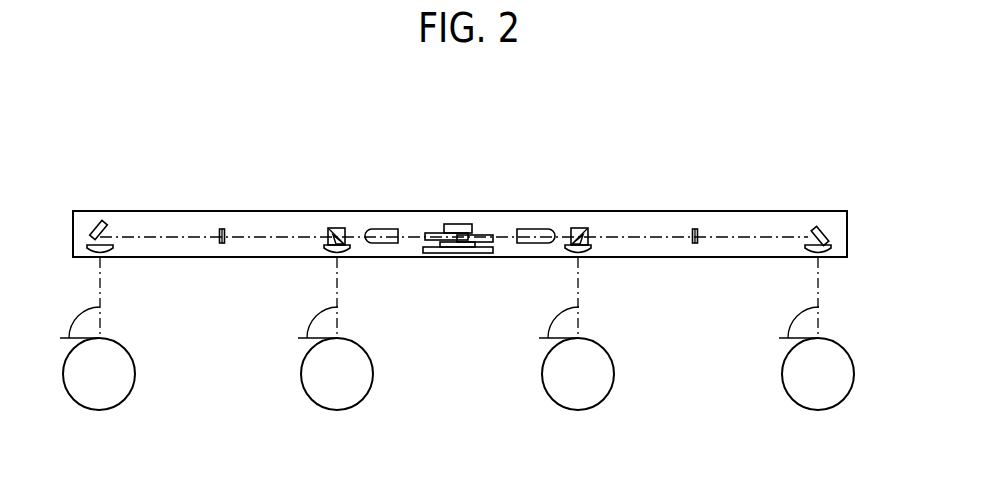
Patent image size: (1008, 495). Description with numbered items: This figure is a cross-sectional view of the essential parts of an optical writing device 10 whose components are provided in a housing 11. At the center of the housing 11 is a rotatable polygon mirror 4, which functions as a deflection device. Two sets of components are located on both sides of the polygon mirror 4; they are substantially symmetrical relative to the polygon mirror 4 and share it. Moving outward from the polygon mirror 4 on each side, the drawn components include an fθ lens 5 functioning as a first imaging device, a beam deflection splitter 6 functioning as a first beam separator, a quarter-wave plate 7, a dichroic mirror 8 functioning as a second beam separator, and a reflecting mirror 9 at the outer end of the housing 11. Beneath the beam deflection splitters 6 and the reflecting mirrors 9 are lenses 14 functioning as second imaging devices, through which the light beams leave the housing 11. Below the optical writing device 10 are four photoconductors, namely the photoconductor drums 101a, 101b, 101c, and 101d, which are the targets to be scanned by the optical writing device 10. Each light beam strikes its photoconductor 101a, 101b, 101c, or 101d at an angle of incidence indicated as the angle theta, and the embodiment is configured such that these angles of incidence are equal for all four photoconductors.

The polygon mirror 4 is at (432, 233).
The fθ lens 5 is at (385, 229).
The beam deflection splitter 6 is at (332, 228).
The quarter-wave plate 7 is at (328, 232).
The dichroic mirror 8 is at (224, 229).
The reflecting mirror 9 is at (104, 229).
The optical writing device 10 is at (642, 150).
The housing 11 is at (208, 258).
The lens 14 is at (110, 253).
The photoconductor 101a is at (119, 344).
The photoconductor 101b is at (358, 344).
The photoconductor 101c is at (599, 344).
The photoconductor 101d is at (839, 344).